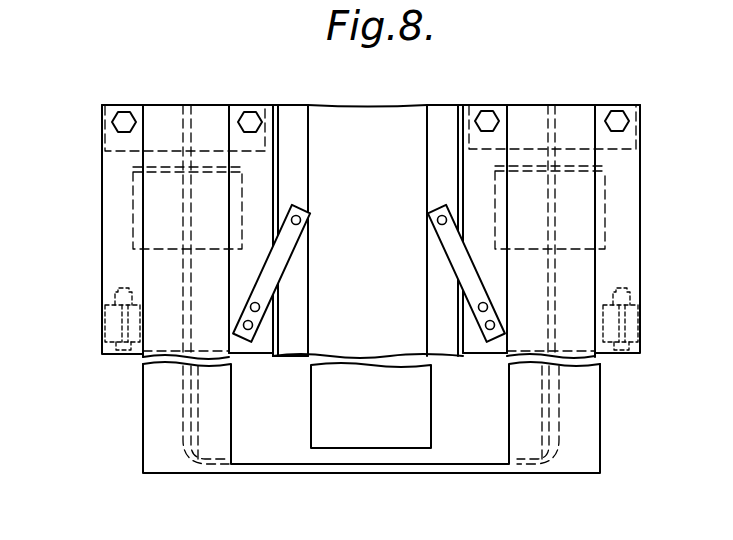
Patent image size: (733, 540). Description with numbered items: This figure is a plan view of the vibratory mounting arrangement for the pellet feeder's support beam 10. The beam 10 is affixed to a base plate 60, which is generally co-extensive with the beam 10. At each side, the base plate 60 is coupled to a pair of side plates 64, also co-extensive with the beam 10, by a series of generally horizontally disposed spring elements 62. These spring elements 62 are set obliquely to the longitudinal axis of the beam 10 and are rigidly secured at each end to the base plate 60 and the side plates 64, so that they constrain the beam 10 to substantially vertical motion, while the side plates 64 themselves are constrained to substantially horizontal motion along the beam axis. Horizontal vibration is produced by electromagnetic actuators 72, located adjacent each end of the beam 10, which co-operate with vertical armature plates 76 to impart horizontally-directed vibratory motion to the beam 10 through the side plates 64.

The support beam 10 is at (360, 430).
The base plate 60 is at (299, 341).
The spring elements 62 is at (287, 257).
The side plates 64 is at (112, 260).
The electromagnetic actuators 72 is at (133, 207).
The vertical armature plates 76 is at (133, 158).